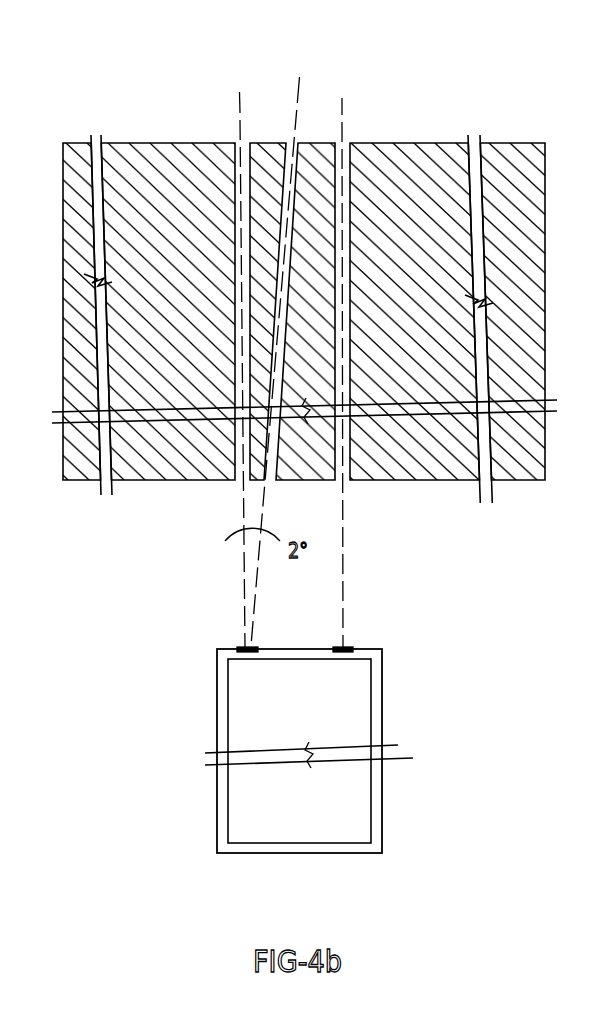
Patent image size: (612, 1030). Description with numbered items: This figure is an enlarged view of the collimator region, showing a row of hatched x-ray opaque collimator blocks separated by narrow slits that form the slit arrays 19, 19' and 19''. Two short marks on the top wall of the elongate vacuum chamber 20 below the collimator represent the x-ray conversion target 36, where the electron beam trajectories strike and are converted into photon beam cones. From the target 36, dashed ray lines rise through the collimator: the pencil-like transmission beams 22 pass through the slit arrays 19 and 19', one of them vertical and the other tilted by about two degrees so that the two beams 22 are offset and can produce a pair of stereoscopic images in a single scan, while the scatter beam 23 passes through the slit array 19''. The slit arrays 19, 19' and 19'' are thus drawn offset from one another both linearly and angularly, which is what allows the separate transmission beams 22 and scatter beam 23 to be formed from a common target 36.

The slit array 19 is at (212, 346).
The slit array 19' is at (304, 339).
The slit array 19'' is at (415, 341).
The elongate vacuum chamber 20 is at (378, 708).
The pencil-like transmission beams 22 is at (238, 107).
The scatter beam 23 is at (343, 107).
The x-ray conversion target 36 is at (343, 648).